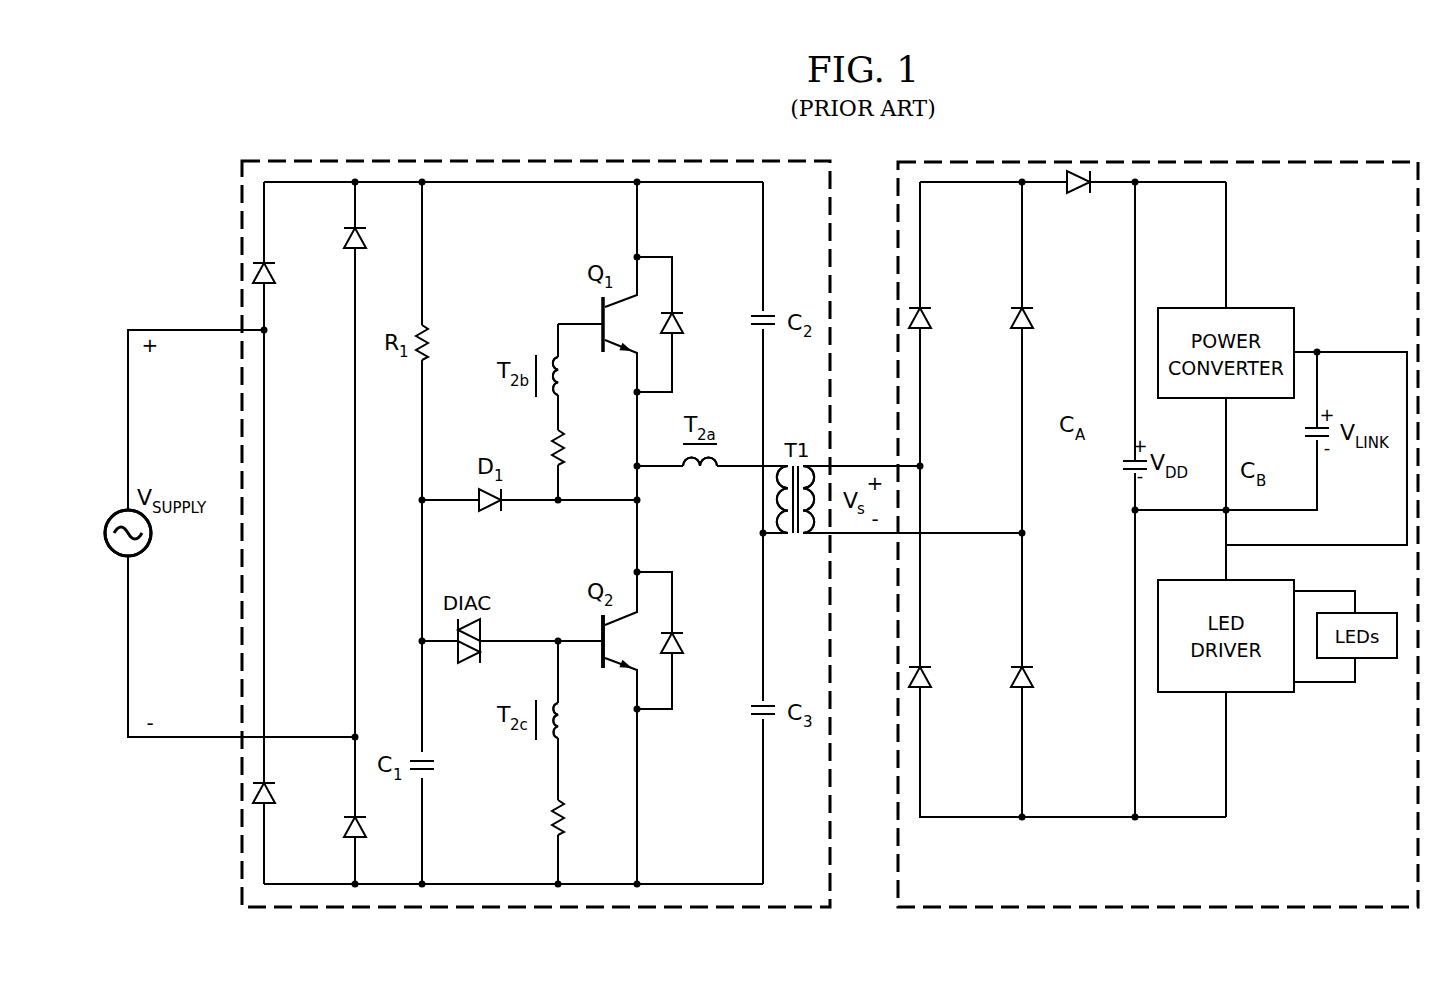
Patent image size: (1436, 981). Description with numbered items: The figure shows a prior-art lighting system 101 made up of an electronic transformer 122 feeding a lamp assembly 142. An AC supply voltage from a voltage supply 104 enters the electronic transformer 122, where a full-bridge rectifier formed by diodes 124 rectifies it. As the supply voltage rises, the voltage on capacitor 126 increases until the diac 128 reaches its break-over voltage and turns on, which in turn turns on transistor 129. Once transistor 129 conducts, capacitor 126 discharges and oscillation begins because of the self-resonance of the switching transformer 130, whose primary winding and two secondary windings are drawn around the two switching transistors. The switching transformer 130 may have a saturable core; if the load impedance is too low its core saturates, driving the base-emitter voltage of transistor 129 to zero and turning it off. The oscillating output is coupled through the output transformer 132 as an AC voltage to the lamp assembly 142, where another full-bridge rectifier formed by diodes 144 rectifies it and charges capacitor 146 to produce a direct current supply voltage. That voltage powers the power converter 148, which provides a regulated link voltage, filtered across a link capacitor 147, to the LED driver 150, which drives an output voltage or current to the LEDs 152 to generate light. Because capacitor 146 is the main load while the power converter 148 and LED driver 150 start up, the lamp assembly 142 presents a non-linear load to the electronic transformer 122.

The lighting system 101 is at (830, 472).
The voltage supply 104 is at (152, 536).
The electronic transformer 122 is at (467, 158).
The diodes 124 is at (344, 239).
The capacitor 126 is at (436, 766).
The diac 128 is at (466, 664).
The transistor 129 is at (600, 625).
The switching transformer 130 is at (547, 360).
The transformer T1 132 is at (796, 537).
The lamp assembly 142 is at (1252, 158).
The diodes 144 is at (930, 321).
The capacitor 146 is at (1123, 465).
The capacitor CB 147 is at (1304, 433).
The power converter 148 is at (1257, 306).
The LED driver 150 is at (1258, 694).
The LEDs 152 is at (1374, 660).